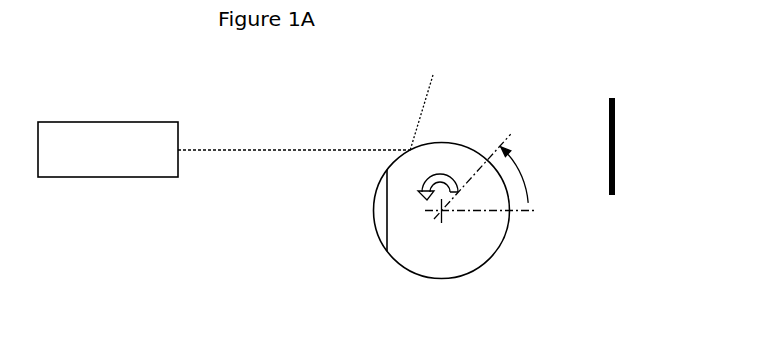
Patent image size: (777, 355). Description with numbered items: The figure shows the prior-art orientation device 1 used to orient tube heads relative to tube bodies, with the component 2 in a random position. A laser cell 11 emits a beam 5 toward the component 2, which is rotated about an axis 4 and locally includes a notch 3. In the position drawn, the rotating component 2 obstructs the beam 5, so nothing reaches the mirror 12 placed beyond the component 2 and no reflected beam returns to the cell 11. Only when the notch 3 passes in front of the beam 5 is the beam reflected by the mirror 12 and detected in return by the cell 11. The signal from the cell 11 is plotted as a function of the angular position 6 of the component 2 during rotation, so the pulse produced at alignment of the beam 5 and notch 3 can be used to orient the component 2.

The optical scanning arrangement 1 is at (283, 117).
The laser cell 11 is at (105, 130).
The beam 5 is at (327, 150).
The component 2 is at (462, 160).
The notch 3 is at (378, 217).
The axis 4 is at (475, 235).
The angular position 6 is at (532, 175).
The mirror 12 is at (612, 137).